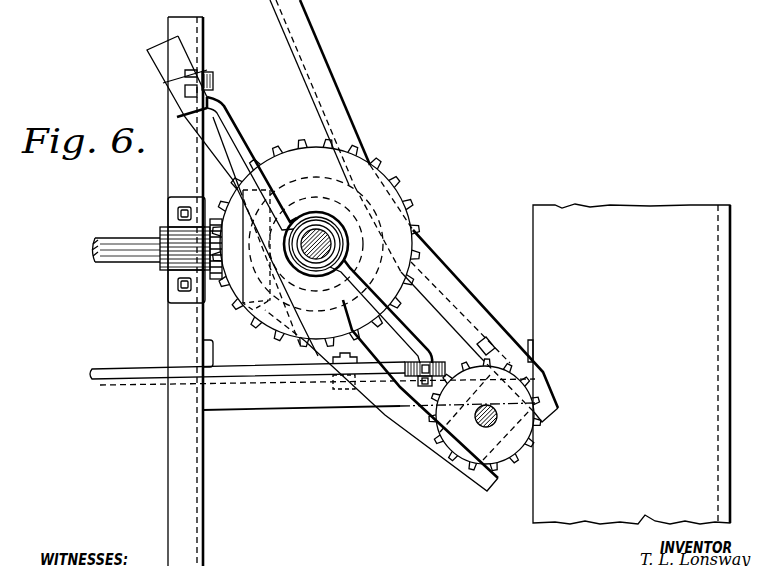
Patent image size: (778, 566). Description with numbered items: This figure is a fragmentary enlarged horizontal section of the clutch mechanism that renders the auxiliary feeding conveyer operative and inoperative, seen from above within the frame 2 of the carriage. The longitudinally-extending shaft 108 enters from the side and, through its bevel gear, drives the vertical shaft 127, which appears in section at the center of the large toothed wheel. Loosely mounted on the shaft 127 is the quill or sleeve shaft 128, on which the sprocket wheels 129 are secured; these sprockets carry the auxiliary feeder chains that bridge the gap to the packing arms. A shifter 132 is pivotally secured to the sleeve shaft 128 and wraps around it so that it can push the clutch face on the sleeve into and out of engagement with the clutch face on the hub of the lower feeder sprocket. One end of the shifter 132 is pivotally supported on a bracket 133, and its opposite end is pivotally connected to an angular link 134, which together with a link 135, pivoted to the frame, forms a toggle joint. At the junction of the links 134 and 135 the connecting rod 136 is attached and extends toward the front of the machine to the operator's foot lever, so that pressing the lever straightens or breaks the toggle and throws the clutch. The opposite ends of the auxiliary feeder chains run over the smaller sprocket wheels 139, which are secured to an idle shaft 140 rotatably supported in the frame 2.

The frame 2 is at (577, 218).
The longitudinally-extending shaft 108 is at (118, 250).
The vertical shaft 127 is at (340, 232).
The quill or sleeve shaft 128 is at (340, 241).
The sprocket wheels 129 is at (357, 167).
The shifter 132 is at (243, 144).
The bracket 133 is at (210, 83).
The angular link 134 is at (397, 360).
The link 135 is at (421, 357).
The connecting rod 136 is at (281, 378).
The sprocket wheels 139 is at (517, 433).
The idle shaft 140 is at (497, 410).